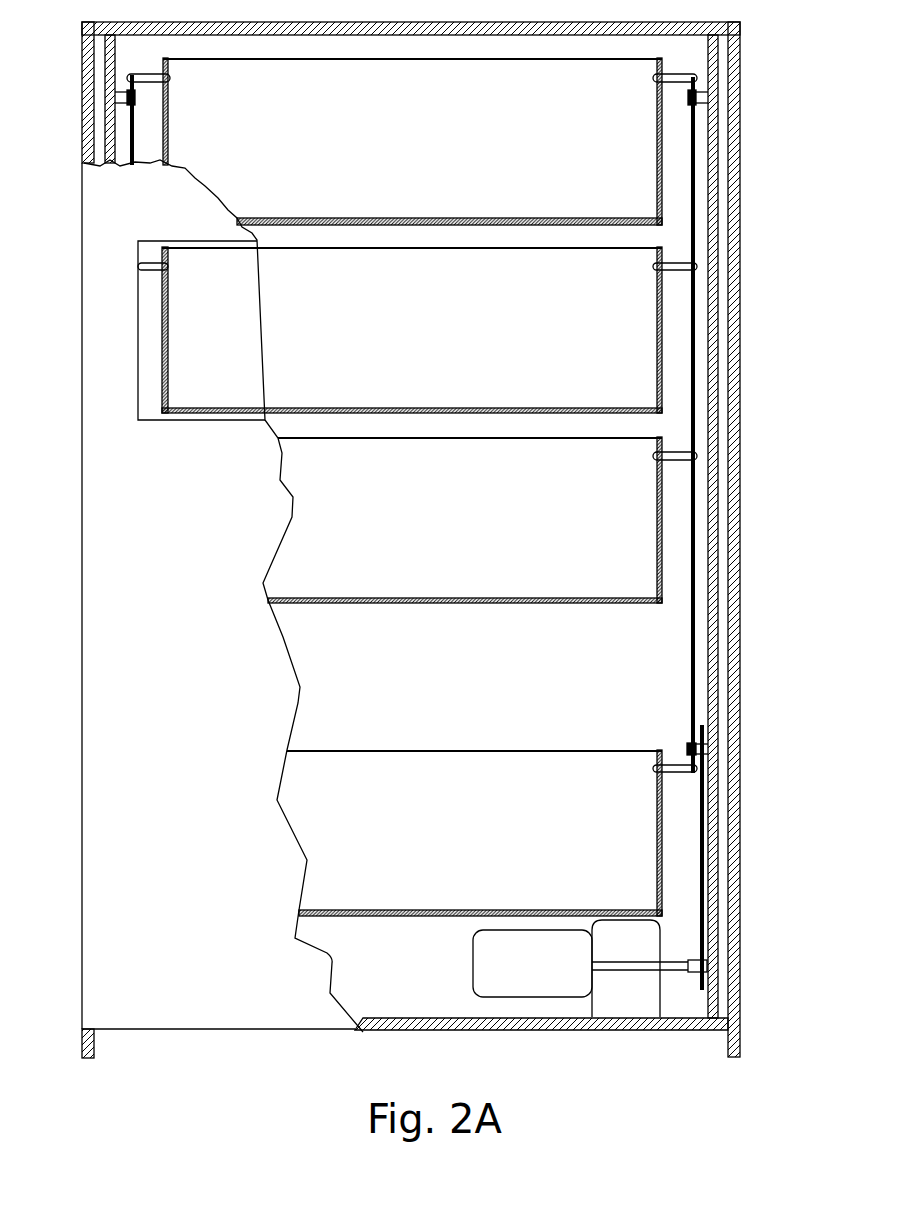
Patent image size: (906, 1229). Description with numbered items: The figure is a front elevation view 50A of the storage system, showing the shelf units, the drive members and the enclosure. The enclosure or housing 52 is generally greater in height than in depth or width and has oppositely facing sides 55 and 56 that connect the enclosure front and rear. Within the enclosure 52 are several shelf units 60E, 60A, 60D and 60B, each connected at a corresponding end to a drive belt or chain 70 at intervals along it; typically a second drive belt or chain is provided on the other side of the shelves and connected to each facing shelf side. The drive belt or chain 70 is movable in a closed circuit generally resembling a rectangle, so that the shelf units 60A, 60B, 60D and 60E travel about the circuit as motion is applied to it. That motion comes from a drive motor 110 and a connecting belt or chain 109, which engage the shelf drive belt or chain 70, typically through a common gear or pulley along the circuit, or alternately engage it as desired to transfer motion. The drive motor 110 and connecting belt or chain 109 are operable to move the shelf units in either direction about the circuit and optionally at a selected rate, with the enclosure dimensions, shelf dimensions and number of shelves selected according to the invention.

The front elevation view 50A is at (111, 1074).
The enclosure 52 is at (745, 21).
The side 55 is at (741, 492).
The side 56 is at (82, 492).
The shelf unit 60E is at (452, 170).
The shelf unit 60A is at (452, 340).
The shelf unit 60D is at (452, 534).
The shelf unit 60B is at (452, 845).
The drive belt or chain 70 is at (134, 118).
The connecting belt or chain 109 is at (700, 878).
The drive motor 110 is at (551, 979).